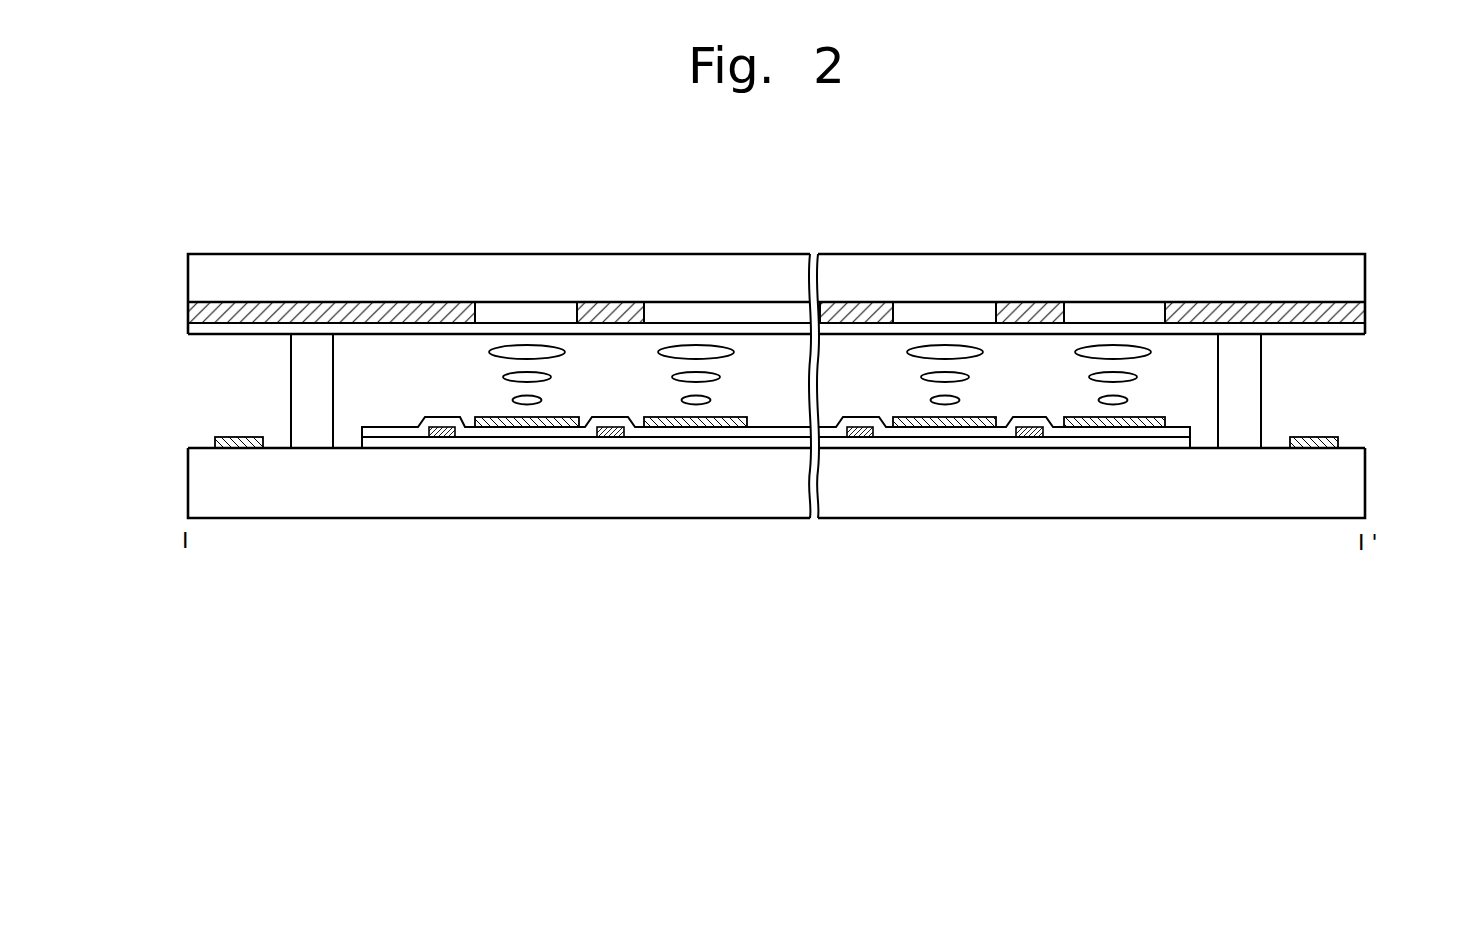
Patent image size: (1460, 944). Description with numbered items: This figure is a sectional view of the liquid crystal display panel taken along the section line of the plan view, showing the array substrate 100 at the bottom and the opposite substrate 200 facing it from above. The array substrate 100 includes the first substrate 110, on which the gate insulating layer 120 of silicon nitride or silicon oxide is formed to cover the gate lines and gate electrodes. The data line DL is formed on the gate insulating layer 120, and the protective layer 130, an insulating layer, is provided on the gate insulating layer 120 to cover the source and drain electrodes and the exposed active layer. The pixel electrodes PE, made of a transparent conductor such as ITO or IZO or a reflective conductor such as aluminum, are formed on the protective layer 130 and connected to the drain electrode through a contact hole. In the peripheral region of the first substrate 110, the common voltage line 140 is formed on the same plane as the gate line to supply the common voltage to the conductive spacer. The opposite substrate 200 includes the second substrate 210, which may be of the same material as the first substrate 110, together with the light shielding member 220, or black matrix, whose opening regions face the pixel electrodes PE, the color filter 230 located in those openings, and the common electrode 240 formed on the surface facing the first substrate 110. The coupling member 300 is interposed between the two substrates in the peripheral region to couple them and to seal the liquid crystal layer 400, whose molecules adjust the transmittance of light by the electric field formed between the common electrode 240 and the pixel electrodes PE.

The array substrate 100 is at (768, 496).
The first substrate 110 is at (1352, 487).
The gate insulating layer 120 is at (1137, 443).
The protective layer 130 is at (890, 433).
The common voltage line 140 is at (1343, 443).
The opposite substrate 200 is at (768, 258).
The second substrate 210 is at (1352, 273).
The light shielding member 220 is at (1352, 313).
The color filter 230 is at (1133, 310).
The common electrode 240 is at (1085, 328).
The coupling member 300 is at (1250, 358).
The liquid crystal layer 400 is at (1195, 383).
The pixel electrode PE is at (945, 428).
The data line DL is at (1027, 437).